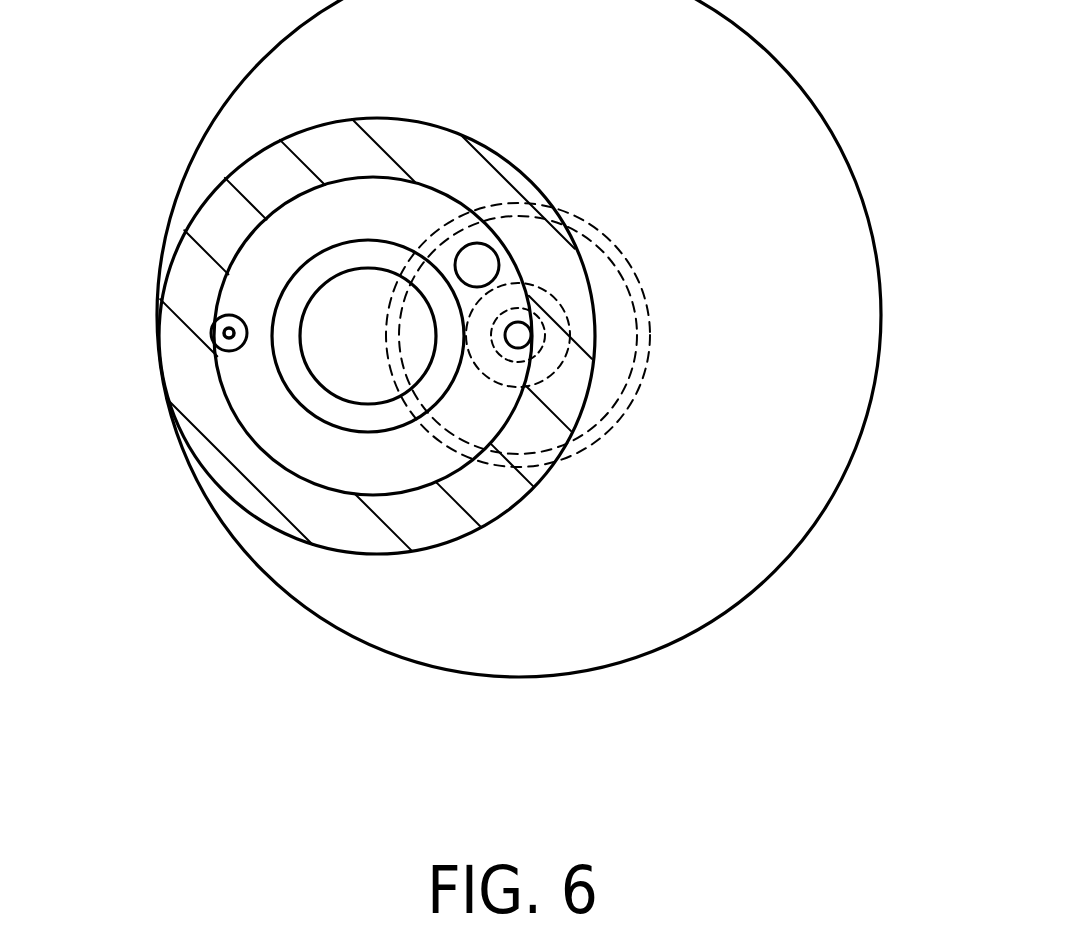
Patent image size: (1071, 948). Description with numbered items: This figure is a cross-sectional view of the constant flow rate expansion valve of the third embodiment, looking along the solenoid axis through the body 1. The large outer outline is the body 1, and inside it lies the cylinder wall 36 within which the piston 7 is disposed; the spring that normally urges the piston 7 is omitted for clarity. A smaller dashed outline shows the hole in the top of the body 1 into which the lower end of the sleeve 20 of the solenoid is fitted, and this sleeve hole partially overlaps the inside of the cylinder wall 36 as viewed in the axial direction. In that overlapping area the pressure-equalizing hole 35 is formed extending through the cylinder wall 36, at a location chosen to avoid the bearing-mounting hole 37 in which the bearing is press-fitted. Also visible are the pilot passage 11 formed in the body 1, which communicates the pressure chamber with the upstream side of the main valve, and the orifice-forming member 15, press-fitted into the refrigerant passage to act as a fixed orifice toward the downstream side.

The body 1 is at (855, 180).
The piston 7 is at (302, 380).
The pilot passage 11 is at (518, 335).
The orifice-forming member 15 is at (228, 316).
The sleeve 20 is at (648, 313).
The pressure-equalizing hole 35 is at (477, 265).
The cylinder wall 36 is at (300, 220).
The bearing-mounting hole 37 is at (623, 413).